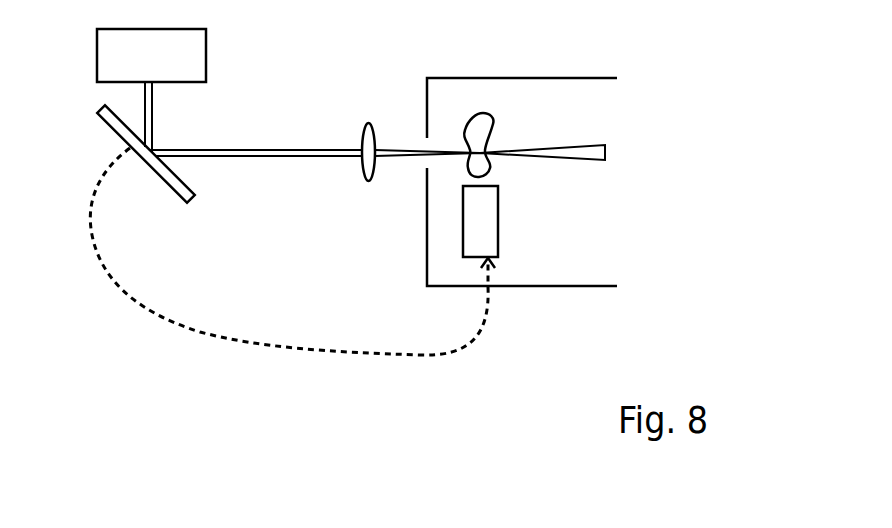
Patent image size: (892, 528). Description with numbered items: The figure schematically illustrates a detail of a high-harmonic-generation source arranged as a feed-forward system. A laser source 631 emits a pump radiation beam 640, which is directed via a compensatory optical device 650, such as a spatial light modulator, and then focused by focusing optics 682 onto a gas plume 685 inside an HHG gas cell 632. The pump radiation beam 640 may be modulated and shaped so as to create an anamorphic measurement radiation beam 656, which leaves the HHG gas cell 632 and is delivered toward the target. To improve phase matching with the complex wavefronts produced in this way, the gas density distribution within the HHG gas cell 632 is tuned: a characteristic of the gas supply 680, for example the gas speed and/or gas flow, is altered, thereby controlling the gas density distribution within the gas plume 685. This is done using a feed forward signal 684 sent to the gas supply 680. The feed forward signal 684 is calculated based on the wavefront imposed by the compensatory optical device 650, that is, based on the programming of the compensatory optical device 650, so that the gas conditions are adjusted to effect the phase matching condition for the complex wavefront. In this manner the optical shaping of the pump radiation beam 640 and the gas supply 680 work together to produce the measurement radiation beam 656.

The laser source 631 is at (207, 54).
The pump radiation beam 640 is at (283, 157).
The compensatory optical device 650 is at (150, 172).
The focusing optics 682 is at (370, 182).
The measurement radiation beam 656 is at (585, 160).
The HHG gas cell 632 is at (517, 105).
The gas plume 685 is at (477, 115).
The gas supply 680 is at (500, 257).
The feed forward signal 684 is at (267, 340).